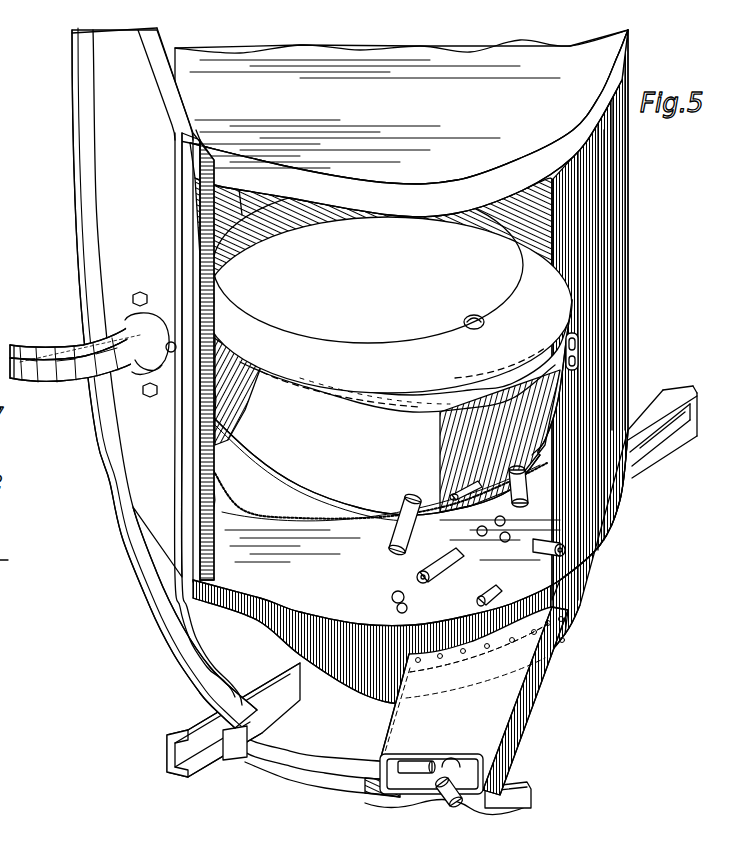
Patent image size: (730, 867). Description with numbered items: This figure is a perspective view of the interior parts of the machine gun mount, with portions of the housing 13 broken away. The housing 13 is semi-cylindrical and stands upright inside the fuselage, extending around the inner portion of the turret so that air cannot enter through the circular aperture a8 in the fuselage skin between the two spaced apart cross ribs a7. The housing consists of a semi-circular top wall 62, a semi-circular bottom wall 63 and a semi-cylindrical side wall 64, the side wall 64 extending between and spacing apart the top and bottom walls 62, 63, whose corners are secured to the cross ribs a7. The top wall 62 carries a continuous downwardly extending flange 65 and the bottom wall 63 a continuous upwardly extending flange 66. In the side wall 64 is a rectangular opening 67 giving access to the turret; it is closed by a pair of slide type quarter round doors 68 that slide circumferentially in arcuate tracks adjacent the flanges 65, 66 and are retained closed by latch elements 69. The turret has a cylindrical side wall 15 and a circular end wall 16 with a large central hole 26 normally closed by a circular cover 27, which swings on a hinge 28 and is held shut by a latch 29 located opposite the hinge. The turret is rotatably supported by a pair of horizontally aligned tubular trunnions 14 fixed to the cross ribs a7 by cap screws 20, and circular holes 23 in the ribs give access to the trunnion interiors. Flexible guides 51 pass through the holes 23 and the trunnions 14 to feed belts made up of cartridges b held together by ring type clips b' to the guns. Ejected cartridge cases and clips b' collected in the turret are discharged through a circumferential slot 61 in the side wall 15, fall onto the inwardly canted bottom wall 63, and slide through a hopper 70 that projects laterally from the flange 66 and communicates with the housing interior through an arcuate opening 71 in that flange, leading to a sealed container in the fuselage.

The housing 13 is at (634, 282).
The semi-circular top wall 62 is at (401, 99).
The semi-cylindrical side wall 64 is at (630, 213).
The downwardly extending flange 65 is at (425, 188).
The rectangular opening 67 is at (602, 344).
The slide type quarter round doors 68 is at (583, 370).
The latch elements 69 is at (580, 341).
The cross ribs a7 is at (164, 378).
The hinge 28 is at (246, 203).
The circular cover 27 is at (368, 265).
The centrally disposed hole 26 is at (347, 331).
The circular end wall 16 is at (378, 343).
The latch 29 is at (468, 318).
The cylindrical side wall 15 is at (356, 447).
The circular aperture a8 is at (256, 506).
The circumferentially extending slot 61 is at (365, 522).
The semi-circular bottom wall 63 is at (275, 590).
The upwardly extending flange 66 is at (383, 756).
The hopper 70 is at (500, 697).
The arcuate opening 71 is at (434, 693).
The cartridges b is at (463, 615).
The ring type clips b' is at (427, 564).
The tubular trunnions 14 is at (130, 331).
The flexible guides 51 is at (68, 384).
The circular holes 23 is at (135, 384).
The cap screws 20 is at (132, 299).